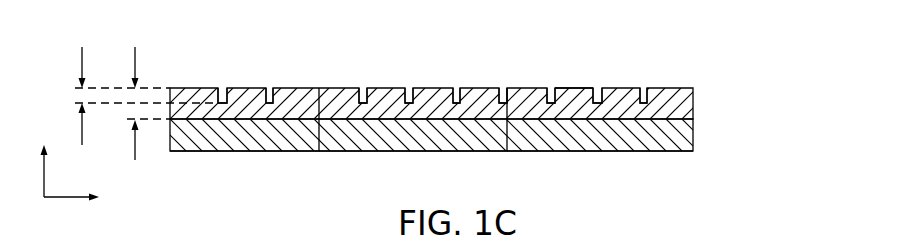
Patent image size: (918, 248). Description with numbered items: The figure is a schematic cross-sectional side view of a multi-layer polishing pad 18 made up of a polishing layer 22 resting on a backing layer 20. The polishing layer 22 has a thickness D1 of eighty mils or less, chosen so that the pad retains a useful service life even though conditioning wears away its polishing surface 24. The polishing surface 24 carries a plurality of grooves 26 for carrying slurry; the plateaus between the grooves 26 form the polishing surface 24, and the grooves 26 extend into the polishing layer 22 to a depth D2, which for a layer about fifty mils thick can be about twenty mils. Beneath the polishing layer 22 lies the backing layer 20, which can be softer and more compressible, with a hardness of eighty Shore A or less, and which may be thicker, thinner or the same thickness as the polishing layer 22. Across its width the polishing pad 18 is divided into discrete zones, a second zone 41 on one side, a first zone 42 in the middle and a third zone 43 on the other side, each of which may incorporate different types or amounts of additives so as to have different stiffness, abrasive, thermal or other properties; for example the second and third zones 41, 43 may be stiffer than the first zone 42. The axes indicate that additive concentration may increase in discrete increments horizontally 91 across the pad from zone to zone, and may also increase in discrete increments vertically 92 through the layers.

The polishing pad 18 is at (701, 72).
The backing layer 20 is at (693, 136).
The polishing layer 22 is at (693, 100).
The polishing surface 24 is at (578, 88).
The grooves 26 is at (455, 88).
The second zone 41 is at (197, 152).
The first zone 42 is at (380, 152).
The third zone 43 is at (557, 152).
The horizontal direction 91 is at (87, 196).
The vertical direction 92 is at (46, 157).
The thickness of the polishing layer D1 is at (148, 92).
The depth of the grooves D2 is at (144, 84).